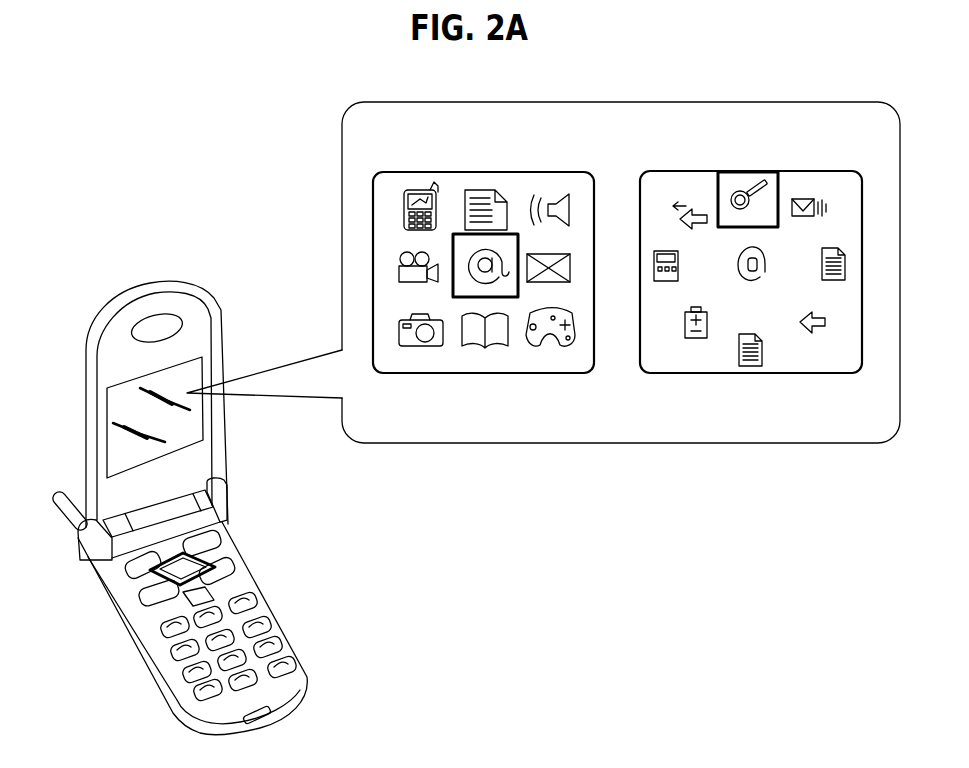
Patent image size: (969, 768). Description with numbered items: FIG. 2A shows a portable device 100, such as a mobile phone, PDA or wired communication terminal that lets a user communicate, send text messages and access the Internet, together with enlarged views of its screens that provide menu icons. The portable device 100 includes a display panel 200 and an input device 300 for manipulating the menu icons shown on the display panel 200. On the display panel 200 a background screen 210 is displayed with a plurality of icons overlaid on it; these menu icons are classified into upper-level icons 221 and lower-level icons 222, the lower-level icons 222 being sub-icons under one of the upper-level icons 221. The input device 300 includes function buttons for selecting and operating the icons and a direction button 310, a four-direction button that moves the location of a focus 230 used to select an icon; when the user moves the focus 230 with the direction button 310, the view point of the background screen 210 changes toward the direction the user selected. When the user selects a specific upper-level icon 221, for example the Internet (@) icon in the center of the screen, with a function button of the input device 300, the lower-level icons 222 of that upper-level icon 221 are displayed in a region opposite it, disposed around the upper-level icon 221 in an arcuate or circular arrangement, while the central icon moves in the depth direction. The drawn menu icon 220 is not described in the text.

The portable device 100 is at (104, 270).
The display panel 200 is at (188, 430).
The background screen 210 is at (385, 213).
The menu icon 220 is at (478, 333).
The upper-level icon 221 is at (755, 278).
The lower-level icon 222 is at (810, 197).
The focus 230 is at (477, 237).
The input device 300 is at (253, 700).
The direction button 310 is at (195, 548).